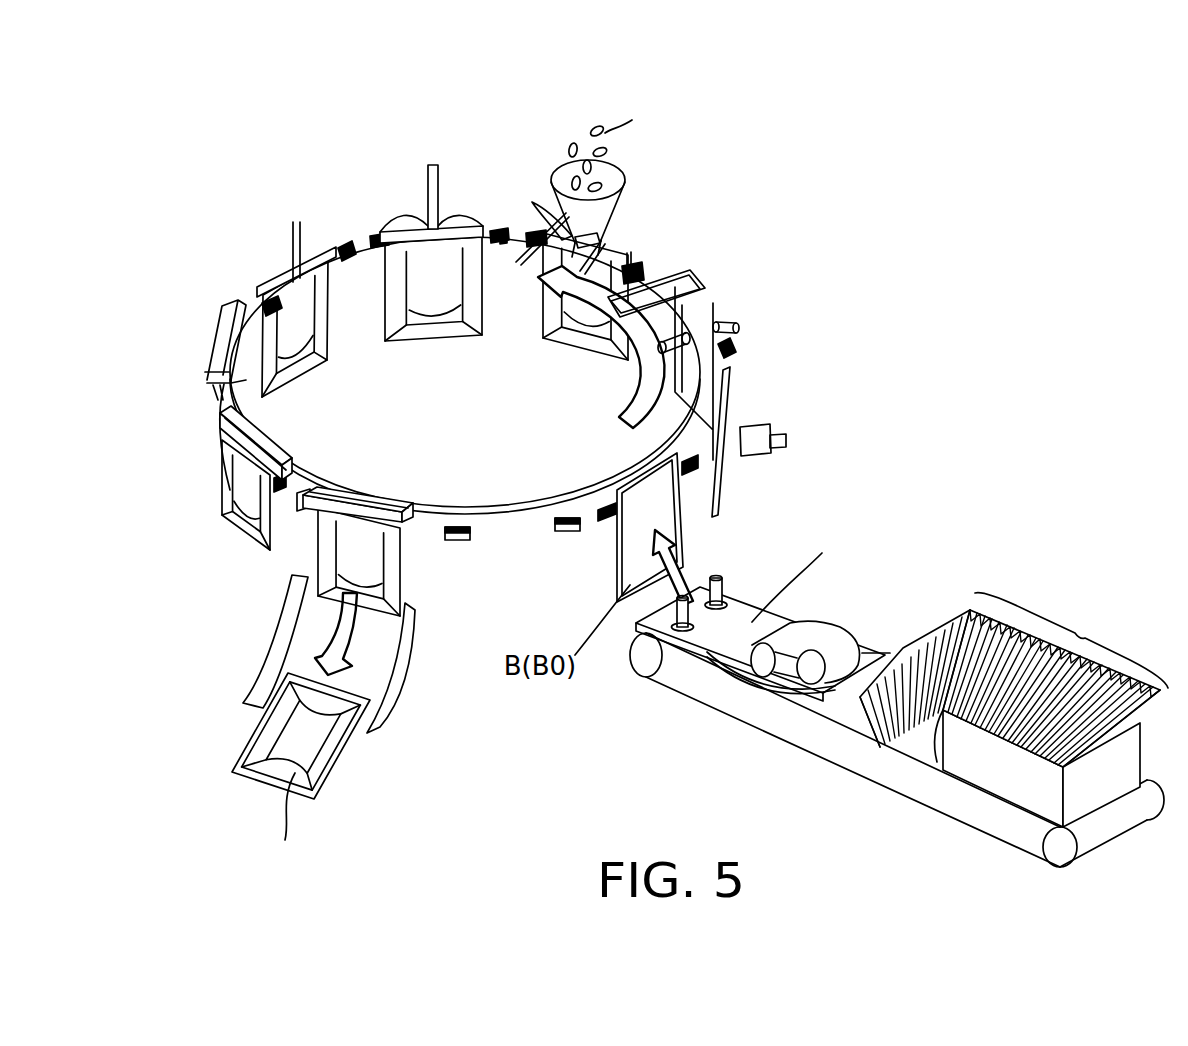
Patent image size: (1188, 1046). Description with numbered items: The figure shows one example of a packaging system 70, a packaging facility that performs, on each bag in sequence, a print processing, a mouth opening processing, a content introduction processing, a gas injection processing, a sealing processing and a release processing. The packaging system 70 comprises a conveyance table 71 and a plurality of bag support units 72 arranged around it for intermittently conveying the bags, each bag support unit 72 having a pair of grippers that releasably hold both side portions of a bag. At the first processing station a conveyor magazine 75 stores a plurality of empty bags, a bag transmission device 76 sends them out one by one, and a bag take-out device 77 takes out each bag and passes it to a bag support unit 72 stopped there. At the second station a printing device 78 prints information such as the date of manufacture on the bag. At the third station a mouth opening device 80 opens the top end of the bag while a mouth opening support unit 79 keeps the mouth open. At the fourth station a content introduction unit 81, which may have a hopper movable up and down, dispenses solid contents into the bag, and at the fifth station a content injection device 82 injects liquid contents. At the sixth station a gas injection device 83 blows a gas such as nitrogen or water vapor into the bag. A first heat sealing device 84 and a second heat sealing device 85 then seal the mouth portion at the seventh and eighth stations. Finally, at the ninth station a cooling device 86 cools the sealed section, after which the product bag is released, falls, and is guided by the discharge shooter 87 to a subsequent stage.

The packaging system 70 is at (794, 178).
The conveyance table 71 is at (447, 485).
The bag support unit 72 is at (565, 535).
The conveyor magazine 75 is at (912, 576).
The bag transmission device 76 is at (838, 640).
The bag take-out device 77 is at (692, 615).
The printing device 78 is at (757, 433).
The mouth opening support unit 79 is at (540, 242).
The mouth opening device 80 is at (702, 336).
The content introduction unit 81 is at (622, 205).
The content injection device 82 is at (437, 185).
The gas injection device 83 is at (302, 220).
The first heat sealing device 84 is at (218, 330).
The second heat sealing device 85 is at (225, 445).
The cooling device 86 is at (312, 520).
The discharge shooter 87 is at (262, 712).